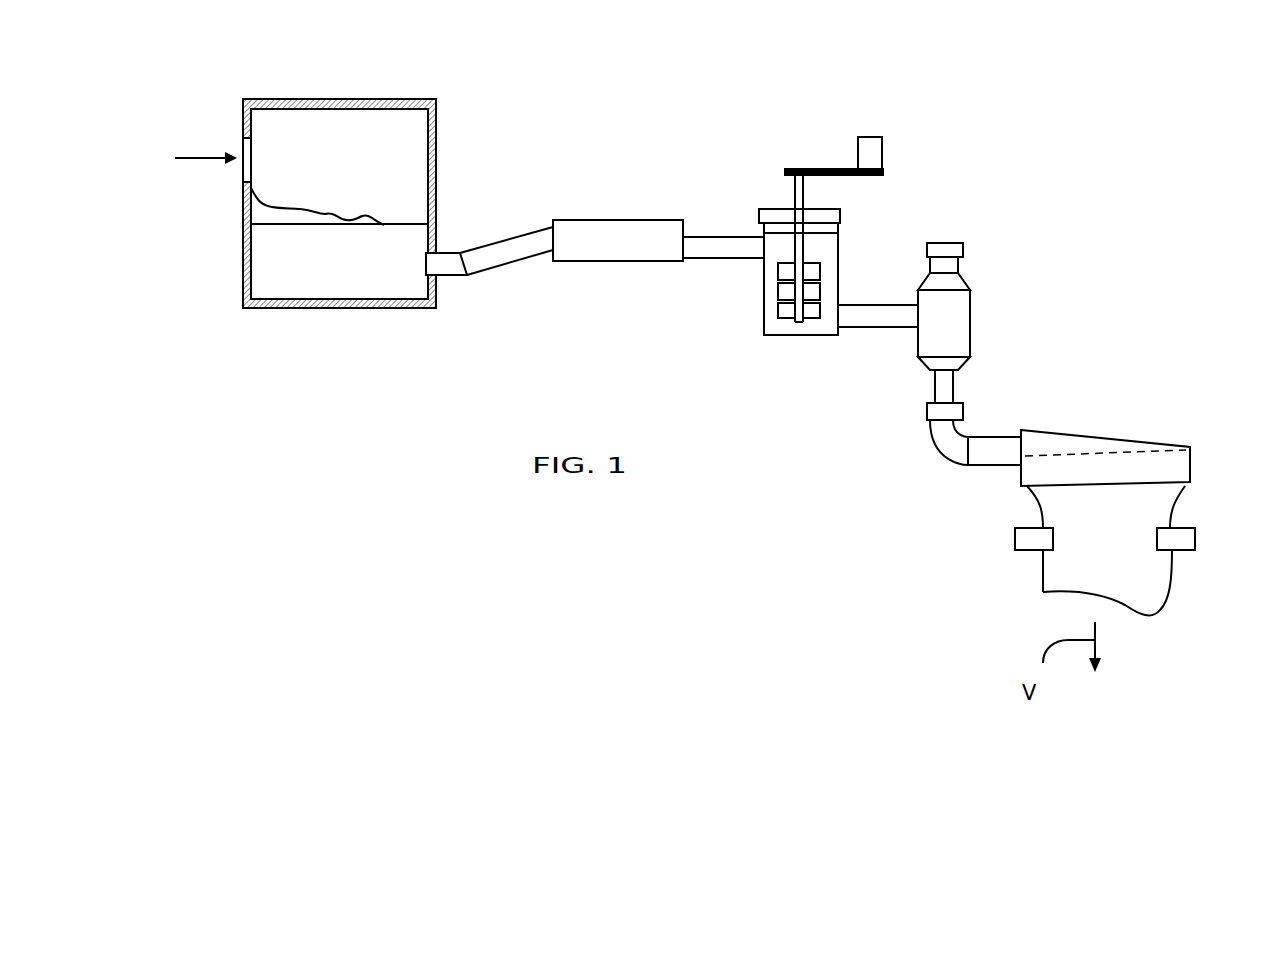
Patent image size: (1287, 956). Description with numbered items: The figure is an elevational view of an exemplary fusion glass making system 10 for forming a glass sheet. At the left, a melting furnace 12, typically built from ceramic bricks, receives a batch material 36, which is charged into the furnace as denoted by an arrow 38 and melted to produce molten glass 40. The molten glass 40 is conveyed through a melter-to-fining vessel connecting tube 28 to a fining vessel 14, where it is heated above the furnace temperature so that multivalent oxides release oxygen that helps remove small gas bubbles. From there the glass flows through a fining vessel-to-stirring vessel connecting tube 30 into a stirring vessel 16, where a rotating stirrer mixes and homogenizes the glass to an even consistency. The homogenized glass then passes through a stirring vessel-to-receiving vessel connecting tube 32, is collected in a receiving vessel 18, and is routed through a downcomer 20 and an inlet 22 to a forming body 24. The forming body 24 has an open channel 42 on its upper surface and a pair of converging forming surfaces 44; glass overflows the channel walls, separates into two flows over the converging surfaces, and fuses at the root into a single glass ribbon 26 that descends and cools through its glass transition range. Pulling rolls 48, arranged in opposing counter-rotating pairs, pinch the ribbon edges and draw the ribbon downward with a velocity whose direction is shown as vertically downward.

The fusion glass making system 10 is at (728, 140).
The melting furnace 12 is at (350, 97).
The fining vessel 14 is at (612, 220).
The stirring vessel 16 is at (763, 323).
The receiving vessel 18 is at (975, 320).
The downcomer 20 is at (933, 388).
The inlet 22 is at (980, 465).
The forming body 24 is at (1193, 465).
The glass ribbon 26 is at (1137, 560).
The melter-to-fining vessel connecting tube 28 is at (530, 228).
The fining vessel-to-stirring vessel connecting tube 30 is at (715, 258).
The stirring vessel-to-receiving vessel connecting tube 32 is at (875, 327).
The batch material 36 is at (290, 205).
The arrow 38 is at (202, 158).
The molten glass 40 is at (344, 262).
The open channel 42 is at (1073, 455).
The converging forming surfaces 44 is at (1043, 475).
The pulling rolls 48 is at (1027, 550).